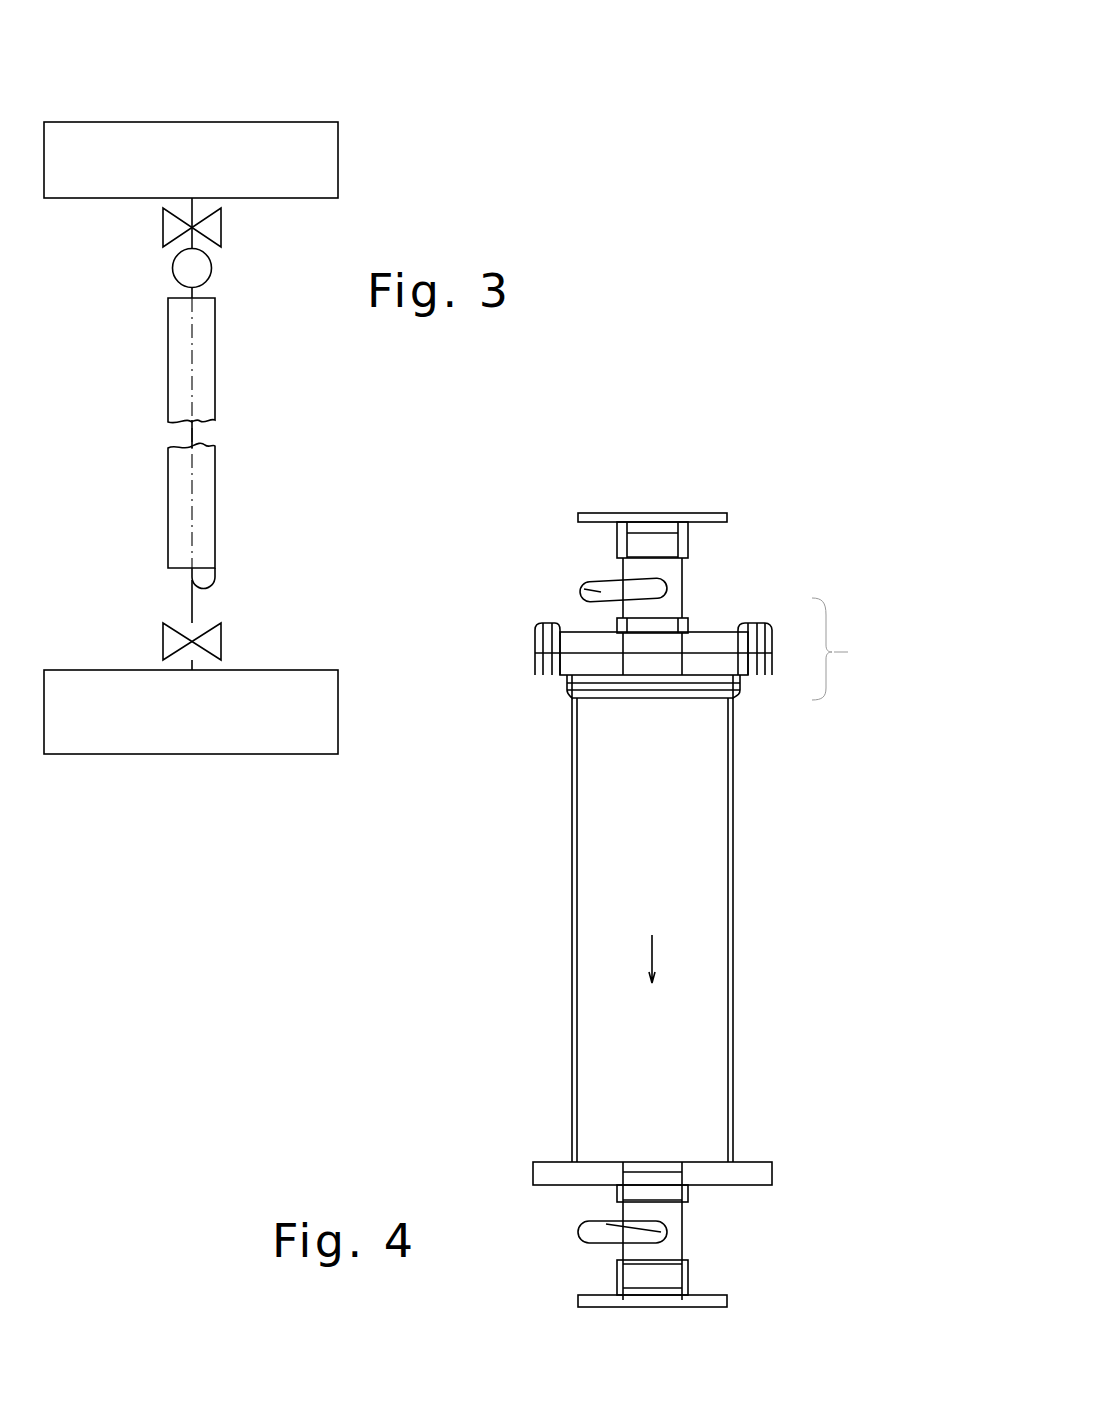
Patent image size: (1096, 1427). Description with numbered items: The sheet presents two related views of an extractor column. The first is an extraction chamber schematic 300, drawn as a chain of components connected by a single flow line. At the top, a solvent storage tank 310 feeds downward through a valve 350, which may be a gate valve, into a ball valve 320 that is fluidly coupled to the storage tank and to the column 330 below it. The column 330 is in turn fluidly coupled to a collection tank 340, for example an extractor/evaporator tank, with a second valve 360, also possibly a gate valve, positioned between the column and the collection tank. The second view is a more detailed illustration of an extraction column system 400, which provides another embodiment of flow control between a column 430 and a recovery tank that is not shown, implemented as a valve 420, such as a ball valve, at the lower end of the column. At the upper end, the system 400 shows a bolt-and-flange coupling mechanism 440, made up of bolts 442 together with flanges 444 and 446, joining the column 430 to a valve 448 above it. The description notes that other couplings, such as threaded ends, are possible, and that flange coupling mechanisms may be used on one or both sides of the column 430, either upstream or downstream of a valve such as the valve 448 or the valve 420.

In FIG. 3, the extraction chamber schematic 300 is at (407, 100).
In FIG. 3, the solvent storage tank 310 is at (168, 189).
In FIG. 3, the ball valve 320 is at (173, 270).
In FIG. 3, the column 330 is at (177, 387).
In FIG. 3, the collection tank 340 is at (168, 739).
In FIG. 3, the valve 350 is at (222, 237).
In FIG. 3, the valve 360 is at (222, 637).
In FIG. 4, the extraction column system 400 is at (718, 480).
In FIG. 4, the valve 420 is at (667, 1230).
In FIG. 4, the column 430 is at (572, 952).
In FIG. 4, the bolt-and-flange coupling mechanism 440 is at (862, 649).
In FIG. 4, the bolts 442 is at (537, 627).
In FIG. 4, the flange 444 is at (533, 647).
In FIG. 4, the flange 446 is at (577, 663).
In FIG. 4, the valve 448 is at (600, 590).